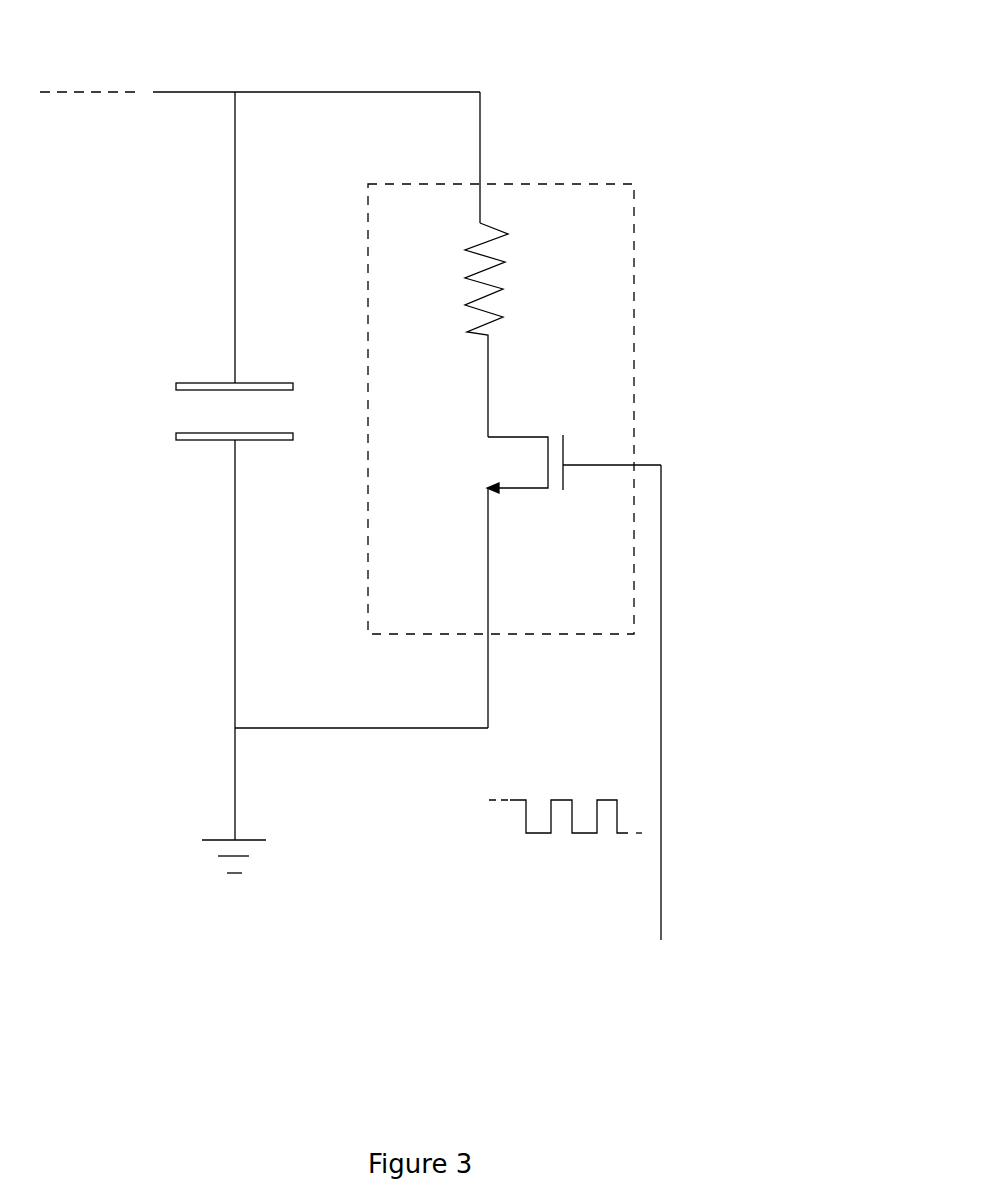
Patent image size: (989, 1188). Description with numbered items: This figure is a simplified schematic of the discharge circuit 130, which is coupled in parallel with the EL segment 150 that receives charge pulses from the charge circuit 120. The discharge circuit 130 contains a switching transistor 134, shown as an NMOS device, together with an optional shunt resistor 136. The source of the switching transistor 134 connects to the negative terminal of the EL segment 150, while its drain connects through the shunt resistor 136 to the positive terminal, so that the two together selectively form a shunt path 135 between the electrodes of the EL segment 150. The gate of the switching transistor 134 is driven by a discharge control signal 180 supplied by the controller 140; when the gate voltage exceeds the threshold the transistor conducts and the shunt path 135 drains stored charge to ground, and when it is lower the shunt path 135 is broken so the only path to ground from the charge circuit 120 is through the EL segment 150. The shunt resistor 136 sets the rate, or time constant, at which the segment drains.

The charge circuit 120 is at (148, 62).
The discharge circuit 130 is at (635, 215).
The switching transistor 134 is at (519, 434).
The shunt path 135 is at (481, 145).
The shunt resistor 136 is at (452, 272).
The controller 140 is at (754, 702).
The EL segment 150 is at (181, 412).
The discharge control signal 180 is at (559, 848).